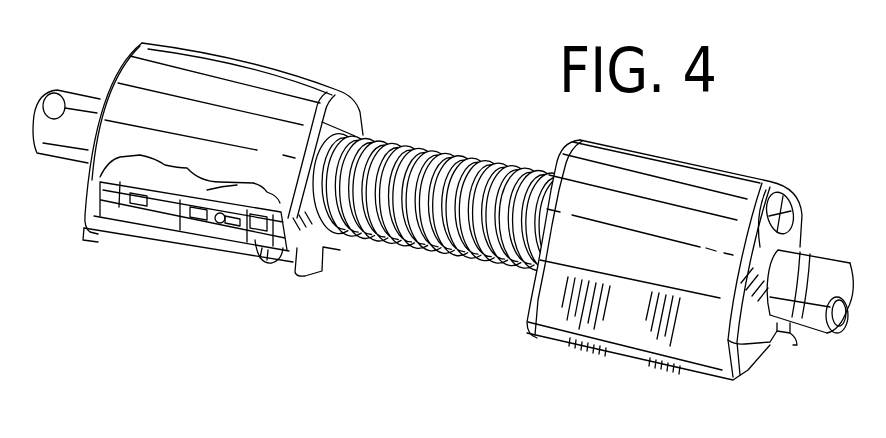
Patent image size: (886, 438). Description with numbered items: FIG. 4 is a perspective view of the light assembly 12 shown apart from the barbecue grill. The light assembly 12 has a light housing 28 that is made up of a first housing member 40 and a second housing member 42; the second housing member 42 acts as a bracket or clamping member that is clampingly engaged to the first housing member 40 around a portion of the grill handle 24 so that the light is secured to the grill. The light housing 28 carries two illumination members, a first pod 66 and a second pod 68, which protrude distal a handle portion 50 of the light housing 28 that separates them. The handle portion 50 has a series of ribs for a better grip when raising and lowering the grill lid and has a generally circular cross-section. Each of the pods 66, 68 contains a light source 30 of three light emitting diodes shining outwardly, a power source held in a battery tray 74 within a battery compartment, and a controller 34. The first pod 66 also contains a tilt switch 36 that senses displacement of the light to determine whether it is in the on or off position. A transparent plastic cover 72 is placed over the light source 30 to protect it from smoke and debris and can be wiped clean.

The light assembly 12 is at (456, 90).
The handle 24 is at (65, 153).
The light housing 28 is at (168, 73).
The light source 30 is at (185, 250).
The controller 34 is at (203, 193).
The tilt switch 36 is at (237, 222).
The first housing member 40 is at (762, 240).
The second housing member 42 is at (790, 333).
The handle portion 50 is at (447, 252).
The first pod 66 is at (265, 90).
The second pod 68 is at (667, 172).
The cover 72 is at (747, 370).
The battery tray 74 is at (137, 222).